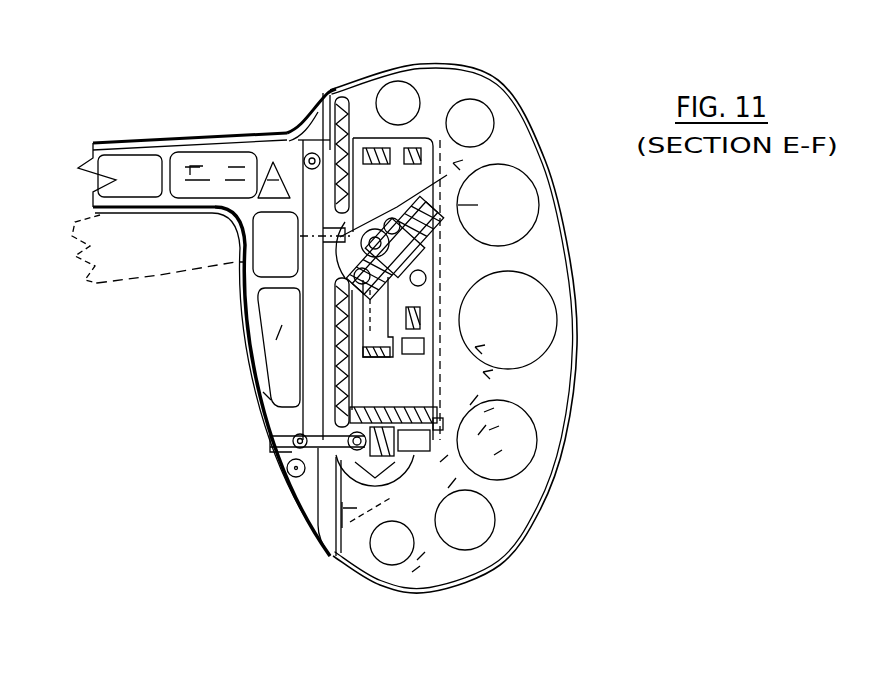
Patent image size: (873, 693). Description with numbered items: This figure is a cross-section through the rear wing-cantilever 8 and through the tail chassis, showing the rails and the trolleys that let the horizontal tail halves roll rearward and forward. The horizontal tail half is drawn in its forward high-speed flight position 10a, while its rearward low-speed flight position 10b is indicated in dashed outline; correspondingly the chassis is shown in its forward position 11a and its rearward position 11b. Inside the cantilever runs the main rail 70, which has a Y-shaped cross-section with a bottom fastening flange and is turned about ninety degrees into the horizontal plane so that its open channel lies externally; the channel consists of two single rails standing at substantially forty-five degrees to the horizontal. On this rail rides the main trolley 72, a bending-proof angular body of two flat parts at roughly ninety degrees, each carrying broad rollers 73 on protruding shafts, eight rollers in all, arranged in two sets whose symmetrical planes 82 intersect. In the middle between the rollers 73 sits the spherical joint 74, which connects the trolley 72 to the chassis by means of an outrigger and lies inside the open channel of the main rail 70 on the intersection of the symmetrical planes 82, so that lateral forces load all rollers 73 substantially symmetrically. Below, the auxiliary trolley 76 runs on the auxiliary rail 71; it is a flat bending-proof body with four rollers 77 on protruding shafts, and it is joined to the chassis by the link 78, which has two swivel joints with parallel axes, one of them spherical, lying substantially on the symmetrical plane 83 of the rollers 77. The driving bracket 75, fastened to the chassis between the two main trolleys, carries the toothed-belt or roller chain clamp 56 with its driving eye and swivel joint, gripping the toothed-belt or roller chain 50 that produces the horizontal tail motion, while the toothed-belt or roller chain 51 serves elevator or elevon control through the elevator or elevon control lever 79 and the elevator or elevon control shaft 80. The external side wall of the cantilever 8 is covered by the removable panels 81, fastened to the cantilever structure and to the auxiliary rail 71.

The rear wing-cantilever 8 is at (541, 509).
The horizontal tail half in forward high-speed flight position 10a is at (122, 145).
The horizontal tail half in rearward low-speed flight position 10b is at (103, 280).
The chassis in forward high-speed flight position 11a is at (256, 352).
The chassis in rearward low-speed flight position 11b is at (300, 378).
The toothed-belt or roller chain for horizontal tail motion 50 is at (380, 152).
The toothed-belt or roller chain for elevator or elevon control 51 is at (423, 152).
The toothed-belt clamp or roller chain clamp 56 is at (483, 372).
The main rail 70 is at (440, 250).
The auxiliary rail 71 is at (521, 510).
The main trolley 72 is at (372, 190).
The rollers of the main trolleys 73 is at (328, 298).
The spherical joint 74 is at (313, 232).
The driving bracket 75 is at (262, 418).
The auxiliary trolley 76 is at (362, 447).
The rollers of the auxiliary trolley 77 is at (368, 453).
The link 78 is at (316, 481).
The elevator or elevon control lever 79 is at (300, 158).
The elevator or elevon control shaft 80 is at (203, 166).
The removable panels 81 is at (323, 93).
The symmetrical planes of the rollers 73 82 is at (453, 163).
The symmetrical plane of the rollers 77 83 is at (290, 442).